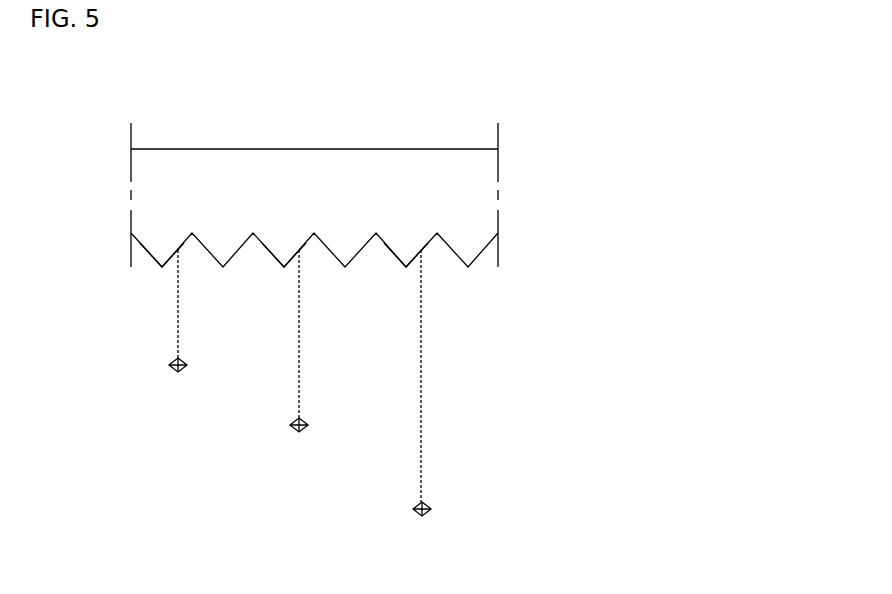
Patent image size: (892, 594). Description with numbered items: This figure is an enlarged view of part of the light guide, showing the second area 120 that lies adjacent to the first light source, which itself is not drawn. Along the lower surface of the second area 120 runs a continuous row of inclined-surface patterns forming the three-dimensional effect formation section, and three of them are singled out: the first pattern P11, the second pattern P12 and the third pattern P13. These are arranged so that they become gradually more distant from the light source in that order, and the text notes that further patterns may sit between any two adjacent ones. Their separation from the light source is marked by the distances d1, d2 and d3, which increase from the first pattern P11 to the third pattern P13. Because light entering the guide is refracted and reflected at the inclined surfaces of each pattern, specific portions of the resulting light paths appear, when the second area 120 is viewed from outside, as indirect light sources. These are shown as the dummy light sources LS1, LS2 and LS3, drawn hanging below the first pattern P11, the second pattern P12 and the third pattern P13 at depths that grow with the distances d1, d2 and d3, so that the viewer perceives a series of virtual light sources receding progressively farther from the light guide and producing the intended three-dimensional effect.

The second area 120 is at (498, 170).
The first pattern P11 is at (150, 258).
The second pattern P12 is at (273, 257).
The third pattern P13 is at (397, 257).
The first distance d1 is at (176, 330).
The second distance d2 is at (297, 357).
The third distance d3 is at (419, 397).
The first dummy light source LS1 is at (172, 372).
The second dummy light source LS2 is at (293, 432).
The third dummy light source LS3 is at (416, 516).